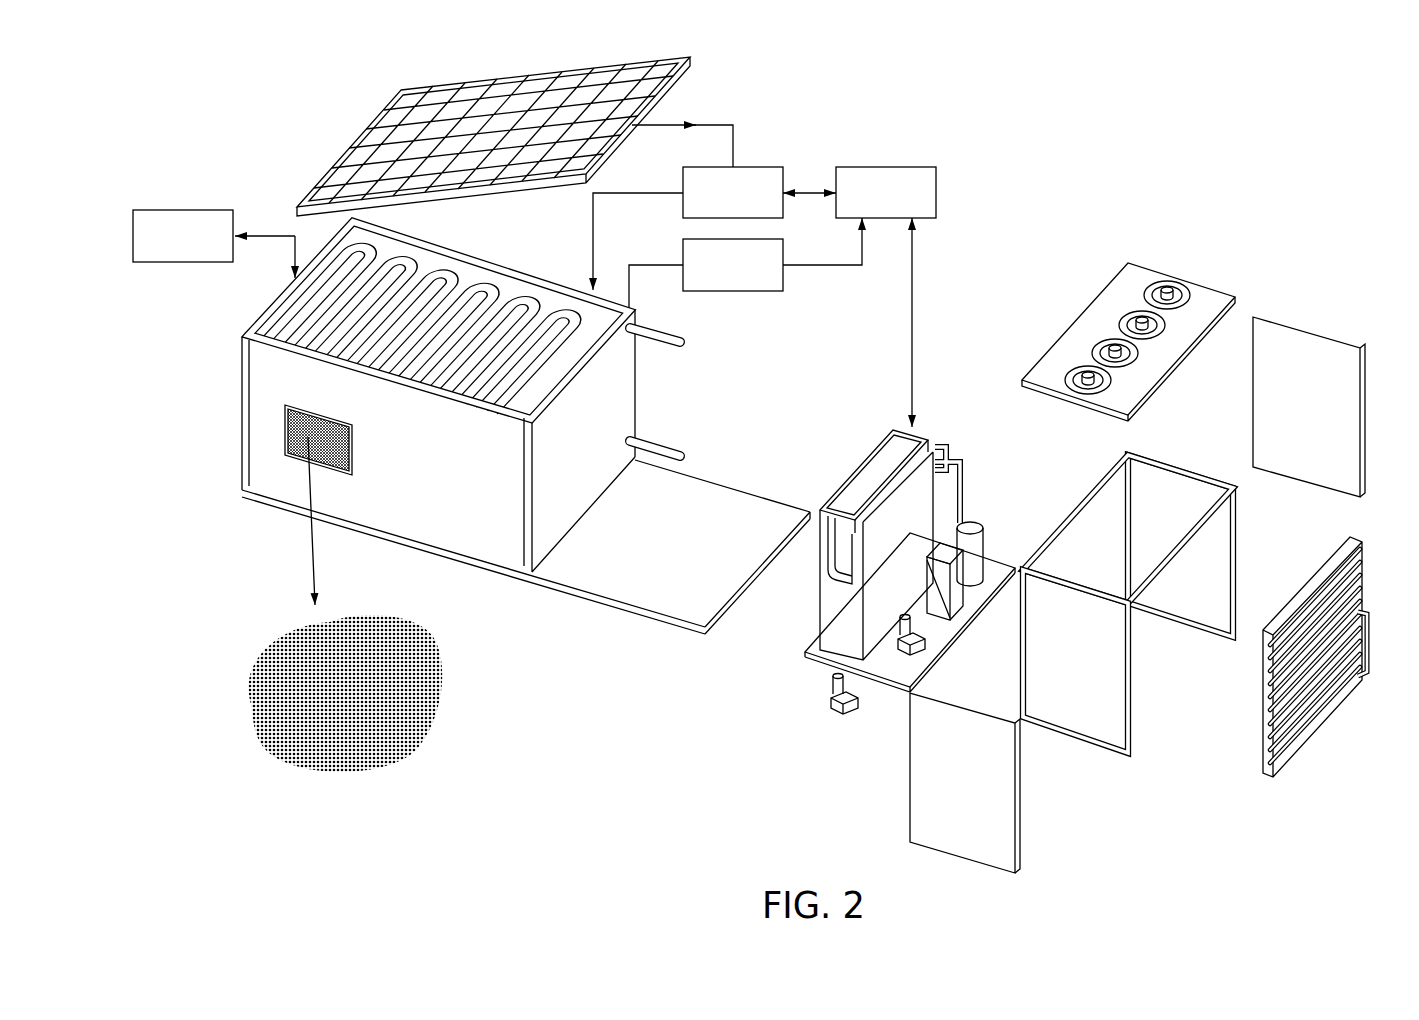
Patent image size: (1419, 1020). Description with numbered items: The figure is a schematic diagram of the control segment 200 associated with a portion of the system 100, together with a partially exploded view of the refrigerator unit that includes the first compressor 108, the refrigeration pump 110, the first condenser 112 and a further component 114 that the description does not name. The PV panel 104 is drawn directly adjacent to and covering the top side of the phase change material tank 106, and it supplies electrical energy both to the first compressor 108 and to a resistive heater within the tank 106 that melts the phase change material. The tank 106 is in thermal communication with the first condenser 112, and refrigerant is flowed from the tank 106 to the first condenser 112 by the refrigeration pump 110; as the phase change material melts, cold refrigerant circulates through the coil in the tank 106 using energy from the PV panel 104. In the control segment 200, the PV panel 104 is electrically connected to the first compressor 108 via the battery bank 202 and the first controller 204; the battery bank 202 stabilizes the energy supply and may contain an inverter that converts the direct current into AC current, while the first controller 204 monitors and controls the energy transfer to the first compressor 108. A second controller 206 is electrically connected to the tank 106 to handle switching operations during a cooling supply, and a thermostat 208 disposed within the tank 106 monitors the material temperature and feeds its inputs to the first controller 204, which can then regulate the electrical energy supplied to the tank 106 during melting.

The system 100 is at (1280, 96).
The PV panel 104 is at (530, 88).
The PCM tank 106 is at (263, 385).
The first compressor 108 is at (830, 610).
The refrigeration pump 110 is at (833, 698).
The first condenser 112 is at (1322, 693).
The fan tray 114 is at (1124, 285).
The control segment 200 is at (945, 120).
The battery bank 202 is at (754, 206).
The first controller 204 is at (907, 206).
The second controller 206 is at (204, 249).
The thermostat 208 is at (754, 278).